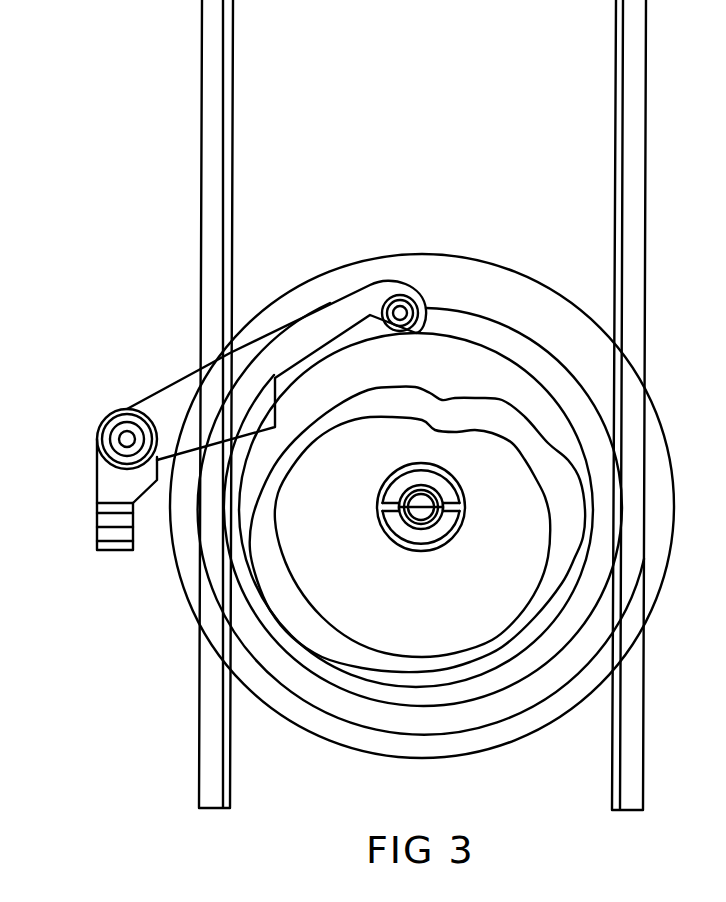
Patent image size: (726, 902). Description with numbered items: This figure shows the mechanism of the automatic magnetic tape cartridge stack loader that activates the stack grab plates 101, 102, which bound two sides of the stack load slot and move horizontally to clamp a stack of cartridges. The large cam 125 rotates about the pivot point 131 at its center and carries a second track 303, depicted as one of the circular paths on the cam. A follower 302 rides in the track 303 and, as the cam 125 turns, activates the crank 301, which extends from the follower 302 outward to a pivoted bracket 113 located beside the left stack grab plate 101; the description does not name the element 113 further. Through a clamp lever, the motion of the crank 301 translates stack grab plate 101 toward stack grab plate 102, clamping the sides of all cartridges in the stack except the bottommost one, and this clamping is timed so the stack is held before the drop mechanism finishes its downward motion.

The stack grab plate 101 is at (232, 212).
The stack grab plate 102 is at (617, 212).
The cam 125 is at (555, 290).
The second track 303 is at (492, 323).
The pivot point 131 is at (465, 495).
The crank 301 is at (330, 305).
The follower 302 is at (421, 296).
The pivot bracket 113 is at (97, 527).